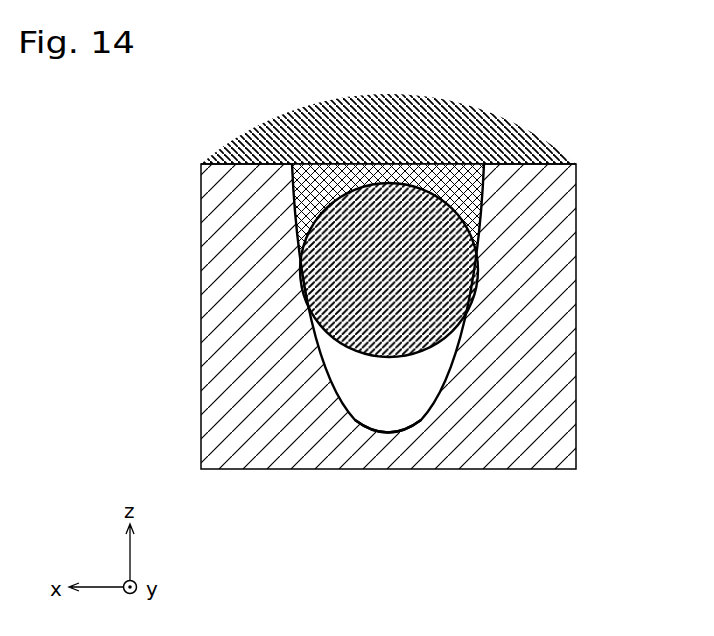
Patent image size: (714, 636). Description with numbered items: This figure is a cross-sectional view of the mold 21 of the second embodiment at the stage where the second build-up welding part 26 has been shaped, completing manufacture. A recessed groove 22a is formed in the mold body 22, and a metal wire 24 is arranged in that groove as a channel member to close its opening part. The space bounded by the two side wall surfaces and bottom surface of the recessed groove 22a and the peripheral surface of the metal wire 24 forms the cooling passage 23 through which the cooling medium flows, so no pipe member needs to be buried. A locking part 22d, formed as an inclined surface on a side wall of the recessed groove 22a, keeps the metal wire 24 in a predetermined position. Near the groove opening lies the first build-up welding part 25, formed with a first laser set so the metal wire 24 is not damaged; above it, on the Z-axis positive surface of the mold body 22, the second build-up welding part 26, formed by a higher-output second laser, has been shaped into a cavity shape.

The mold 21 is at (611, 414).
The mold body 22 is at (184, 412).
The recessed groove 22a is at (355, 412).
The locking part 22d is at (462, 353).
The cooling passage 23 is at (434, 404).
The metal wire 24 is at (387, 193).
The first build-up welding part 25 is at (325, 184).
The second build-up welding part 26 is at (500, 123).